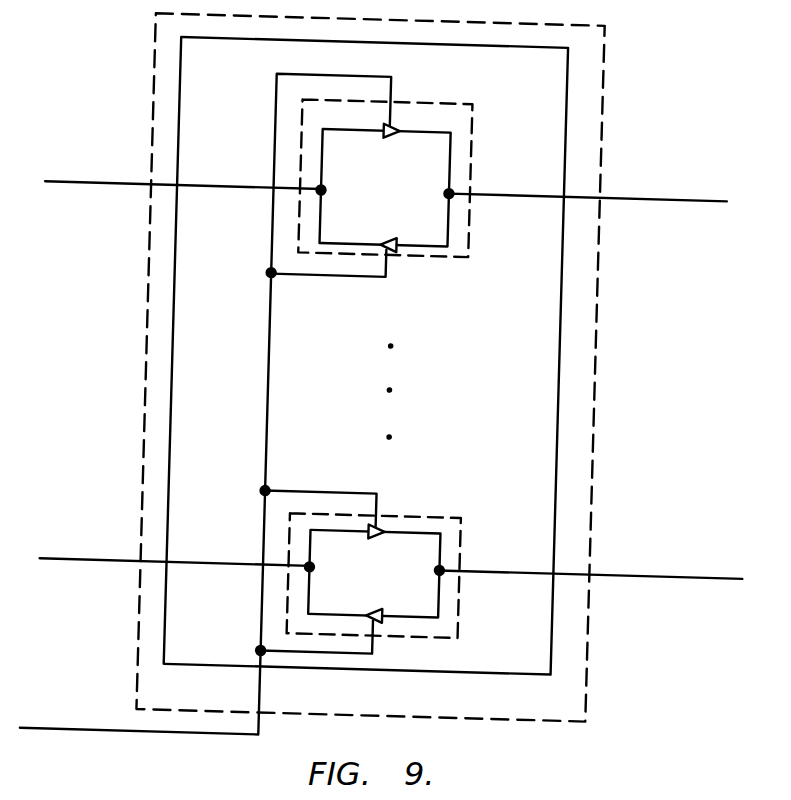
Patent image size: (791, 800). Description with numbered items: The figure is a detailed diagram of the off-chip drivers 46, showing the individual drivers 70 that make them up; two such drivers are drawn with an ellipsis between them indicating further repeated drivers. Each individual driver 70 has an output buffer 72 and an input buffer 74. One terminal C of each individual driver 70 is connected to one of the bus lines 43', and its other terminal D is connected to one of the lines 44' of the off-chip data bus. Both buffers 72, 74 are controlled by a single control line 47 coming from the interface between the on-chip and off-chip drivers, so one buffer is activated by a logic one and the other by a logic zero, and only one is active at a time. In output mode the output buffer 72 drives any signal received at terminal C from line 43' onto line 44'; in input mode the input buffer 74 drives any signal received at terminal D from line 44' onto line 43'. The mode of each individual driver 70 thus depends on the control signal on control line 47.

The off-chip drivers 46 is at (563, 20).
The individual driver 70 is at (463, 102).
The output buffer 72 is at (382, 139).
The input buffer 74 is at (386, 238).
The bus line 43' is at (179, 353).
The line 44' is at (595, 367).
The control line 47 is at (83, 737).